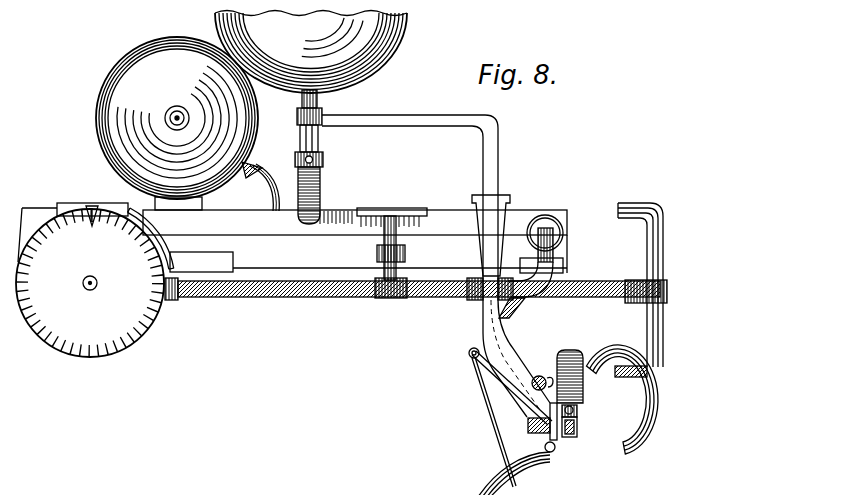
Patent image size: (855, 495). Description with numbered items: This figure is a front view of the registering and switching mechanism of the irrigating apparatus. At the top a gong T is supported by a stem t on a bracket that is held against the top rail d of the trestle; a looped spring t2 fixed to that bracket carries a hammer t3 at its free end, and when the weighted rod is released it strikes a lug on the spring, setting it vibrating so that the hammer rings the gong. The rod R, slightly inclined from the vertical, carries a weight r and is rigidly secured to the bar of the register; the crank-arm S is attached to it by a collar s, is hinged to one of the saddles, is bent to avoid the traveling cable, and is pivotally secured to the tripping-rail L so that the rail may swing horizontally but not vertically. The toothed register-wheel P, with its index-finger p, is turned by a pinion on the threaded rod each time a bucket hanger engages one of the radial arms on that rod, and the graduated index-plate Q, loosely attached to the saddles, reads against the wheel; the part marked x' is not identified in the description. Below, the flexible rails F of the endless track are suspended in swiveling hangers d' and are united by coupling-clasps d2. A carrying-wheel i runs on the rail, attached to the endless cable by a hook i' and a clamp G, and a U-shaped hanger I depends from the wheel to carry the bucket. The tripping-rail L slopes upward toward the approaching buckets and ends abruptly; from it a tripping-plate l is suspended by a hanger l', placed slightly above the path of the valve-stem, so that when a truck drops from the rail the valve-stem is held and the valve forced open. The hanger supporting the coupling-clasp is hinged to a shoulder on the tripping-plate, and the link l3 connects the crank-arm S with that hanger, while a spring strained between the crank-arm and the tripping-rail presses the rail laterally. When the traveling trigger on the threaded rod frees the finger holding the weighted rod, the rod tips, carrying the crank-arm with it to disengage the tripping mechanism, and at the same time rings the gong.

The weight r is at (311, 46).
The gong T is at (177, 118).
The stem t is at (203, 200).
The looped spring t2 is at (264, 187).
The hammer t3 is at (254, 159).
The rod R is at (322, 140).
The collar s is at (323, 111).
The lower column body x' is at (321, 195).
The crank-arm S is at (436, 266).
The index-plate Q is at (251, 258).
The register-wheel P is at (102, 283).
The index-finger p is at (92, 201).
The top rail d is at (541, 228).
The swiveling hanger d' is at (526, 275).
The link l3 is at (512, 393).
The tripping-plate l is at (498, 422).
The hanger l' is at (516, 468).
The coupling-clasp d2 is at (576, 442).
The tripping-rail L is at (578, 417).
The rail F is at (578, 430).
The carrying-wheel i is at (570, 377).
The clamp G is at (540, 376).
The hook i' is at (537, 370).
The hanger I is at (625, 399).